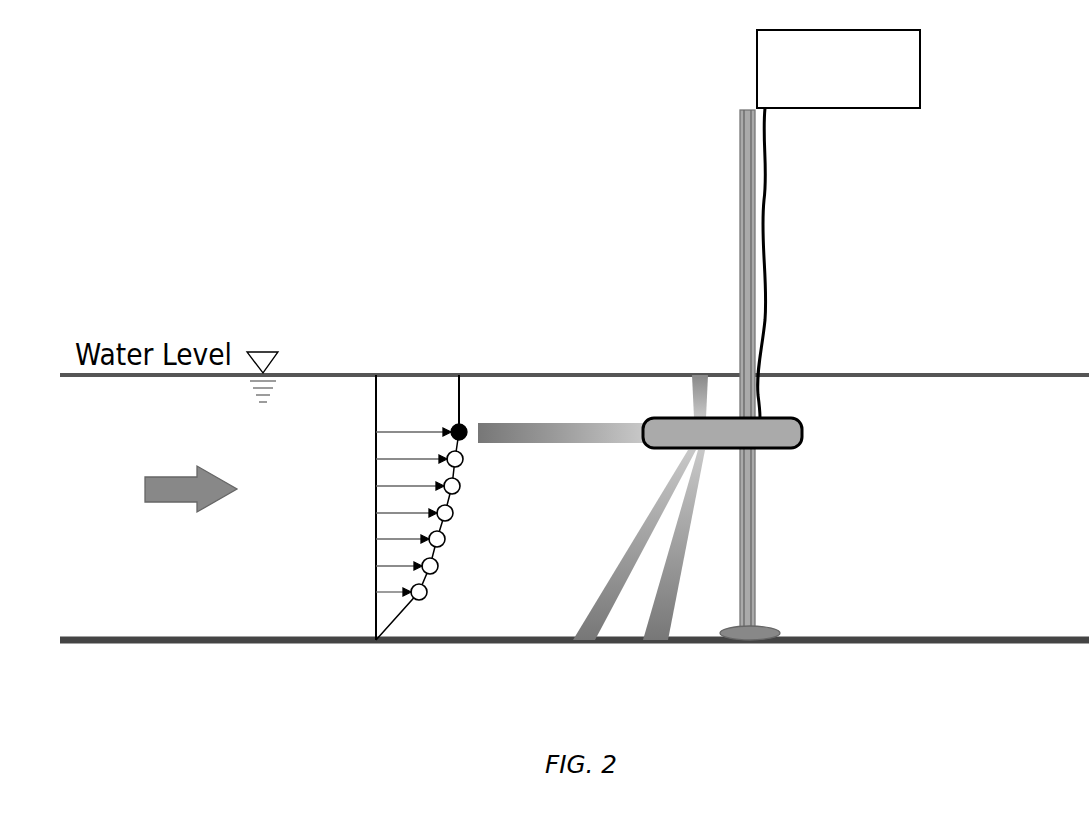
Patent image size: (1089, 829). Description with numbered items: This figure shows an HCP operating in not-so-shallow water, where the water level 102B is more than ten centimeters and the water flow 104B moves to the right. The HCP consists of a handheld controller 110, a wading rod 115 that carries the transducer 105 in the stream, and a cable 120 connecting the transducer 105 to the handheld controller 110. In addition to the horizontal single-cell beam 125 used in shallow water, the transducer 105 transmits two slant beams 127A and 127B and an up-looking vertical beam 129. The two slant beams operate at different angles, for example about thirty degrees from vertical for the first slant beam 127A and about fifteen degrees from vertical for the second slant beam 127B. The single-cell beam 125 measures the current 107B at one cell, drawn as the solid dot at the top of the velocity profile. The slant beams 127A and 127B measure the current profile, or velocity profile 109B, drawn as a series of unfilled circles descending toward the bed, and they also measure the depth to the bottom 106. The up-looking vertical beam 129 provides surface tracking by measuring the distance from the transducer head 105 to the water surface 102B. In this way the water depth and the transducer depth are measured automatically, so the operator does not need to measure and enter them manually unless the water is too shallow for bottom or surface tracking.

The water level 102B is at (280, 372).
The water flow 104B is at (157, 496).
The transducer 105 is at (790, 433).
The bottom 106 is at (167, 636).
The current 107B is at (387, 430).
The current profile (velocity profile) 109B is at (453, 513).
The handheld controller 110 is at (843, 30).
The wading rod 115 is at (745, 243).
The cable 120 is at (765, 265).
The beam 1 (single cell) 125 is at (585, 425).
The beam 2 (slant beam) 127A is at (687, 450).
The beam 3 (slant beam) 127B is at (697, 452).
The beam 4 (vertical) 129 is at (700, 375).